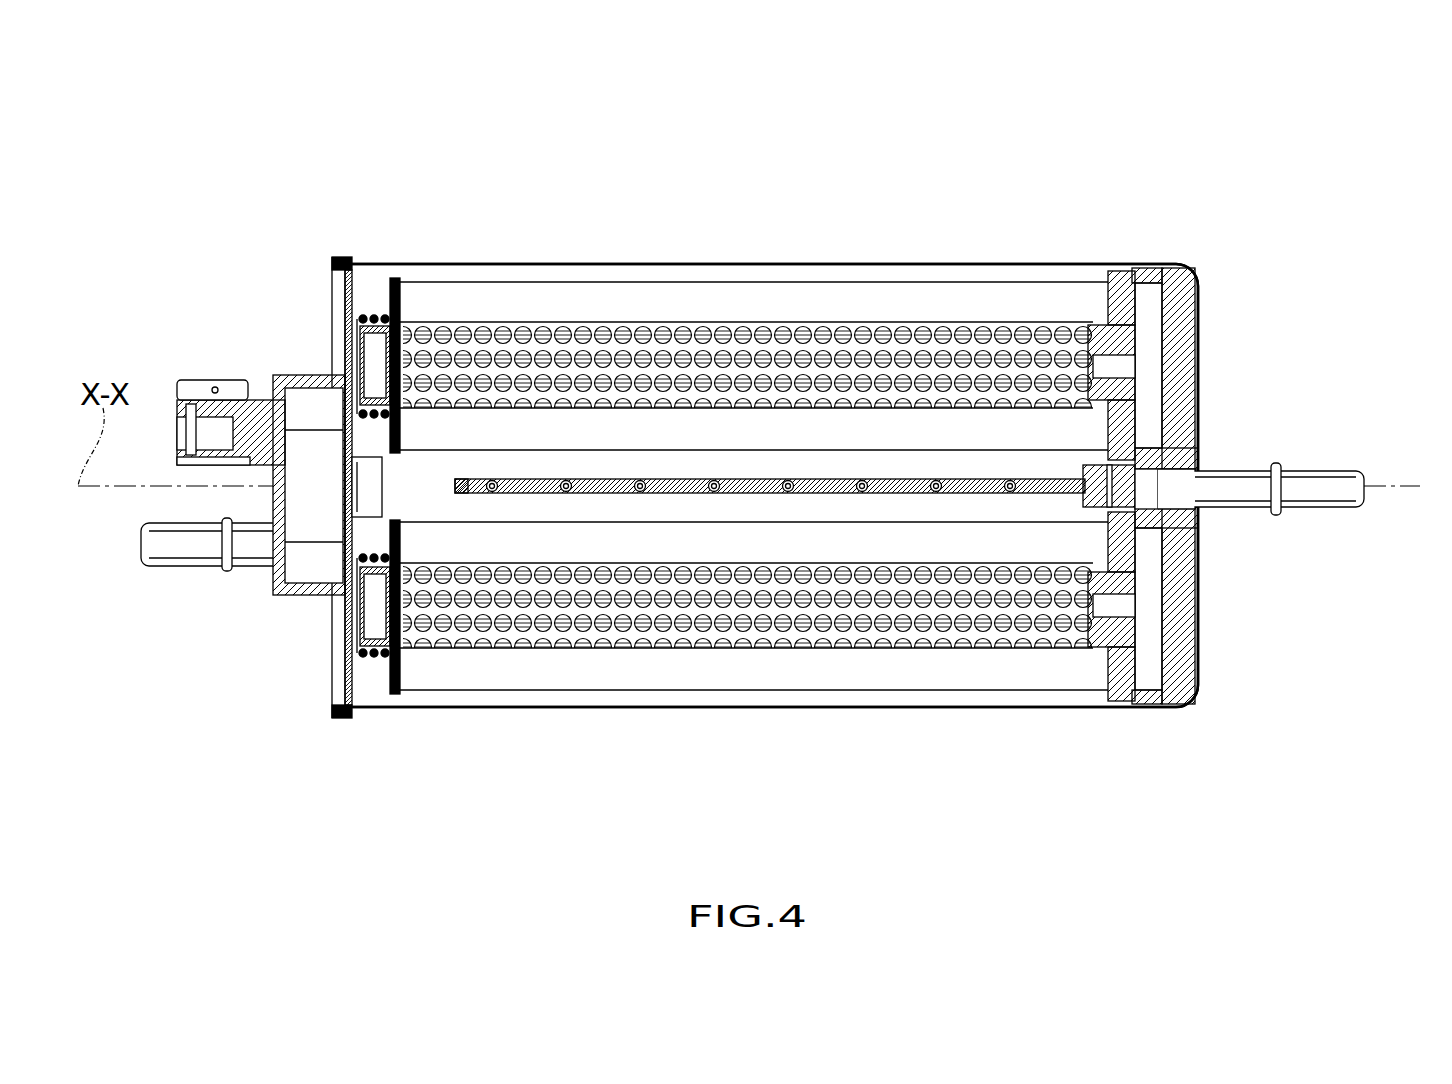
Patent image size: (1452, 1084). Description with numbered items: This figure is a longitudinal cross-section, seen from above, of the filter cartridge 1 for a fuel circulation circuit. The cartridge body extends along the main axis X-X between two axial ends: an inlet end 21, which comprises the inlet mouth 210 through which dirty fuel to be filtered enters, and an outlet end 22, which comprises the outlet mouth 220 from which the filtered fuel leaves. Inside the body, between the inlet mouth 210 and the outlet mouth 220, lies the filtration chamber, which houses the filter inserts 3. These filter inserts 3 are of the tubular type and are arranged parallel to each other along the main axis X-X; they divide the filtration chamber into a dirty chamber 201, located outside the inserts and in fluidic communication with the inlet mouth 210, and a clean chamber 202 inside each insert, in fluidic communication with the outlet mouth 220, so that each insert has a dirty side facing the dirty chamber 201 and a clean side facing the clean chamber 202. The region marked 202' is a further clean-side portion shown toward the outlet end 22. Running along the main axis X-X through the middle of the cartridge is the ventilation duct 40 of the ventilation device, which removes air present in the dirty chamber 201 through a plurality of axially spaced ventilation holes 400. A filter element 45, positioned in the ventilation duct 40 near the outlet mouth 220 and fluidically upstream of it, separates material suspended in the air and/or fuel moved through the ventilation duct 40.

The filter cartridge 1 is at (1118, 745).
The filter insert 3 is at (693, 253).
The inlet end 21 is at (330, 308).
The inlet mouth 210 is at (367, 482).
The outlet end 22 is at (1238, 318).
The outlet mouth 220 is at (1147, 488).
The filter element 45 is at (1140, 372).
The dirty chamber 201 is at (433, 470).
The clean chamber 202 is at (737, 474).
The perforated section socket 202' is at (1237, 650).
The ventilation duct 40 is at (905, 468).
The ventilation holes 400 is at (567, 497).